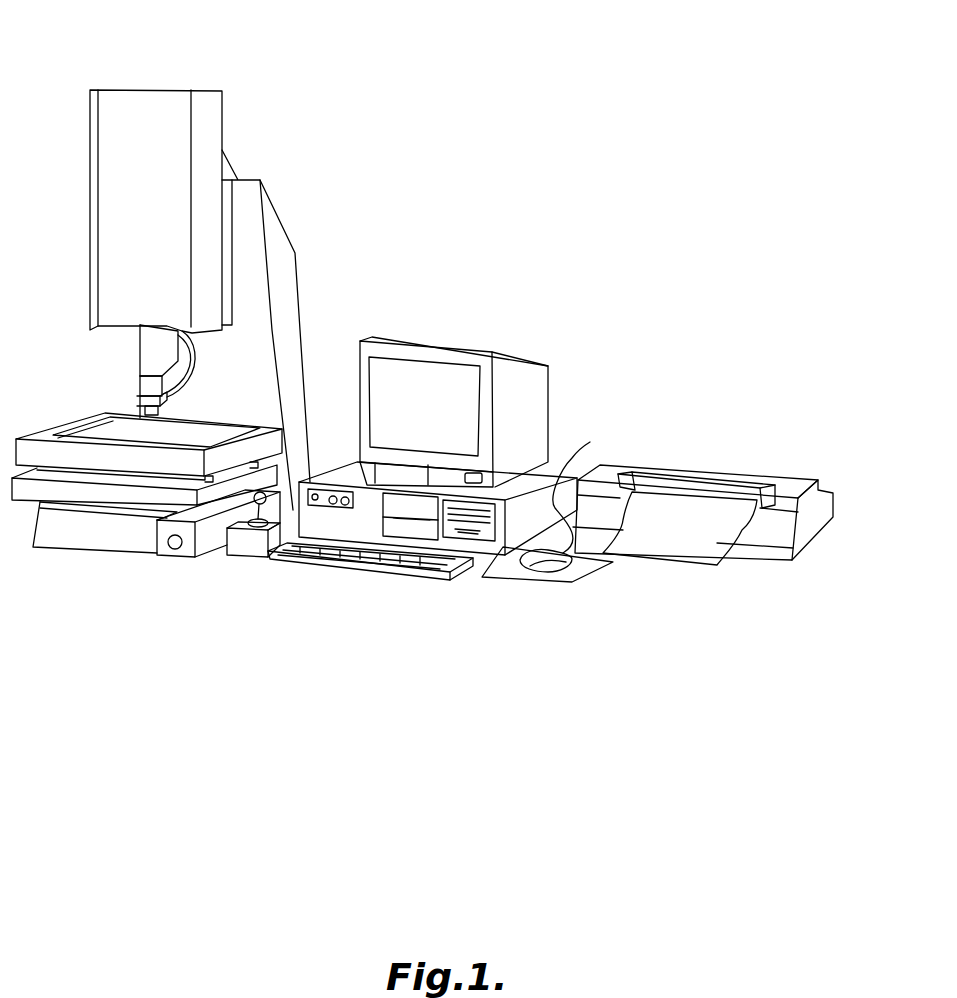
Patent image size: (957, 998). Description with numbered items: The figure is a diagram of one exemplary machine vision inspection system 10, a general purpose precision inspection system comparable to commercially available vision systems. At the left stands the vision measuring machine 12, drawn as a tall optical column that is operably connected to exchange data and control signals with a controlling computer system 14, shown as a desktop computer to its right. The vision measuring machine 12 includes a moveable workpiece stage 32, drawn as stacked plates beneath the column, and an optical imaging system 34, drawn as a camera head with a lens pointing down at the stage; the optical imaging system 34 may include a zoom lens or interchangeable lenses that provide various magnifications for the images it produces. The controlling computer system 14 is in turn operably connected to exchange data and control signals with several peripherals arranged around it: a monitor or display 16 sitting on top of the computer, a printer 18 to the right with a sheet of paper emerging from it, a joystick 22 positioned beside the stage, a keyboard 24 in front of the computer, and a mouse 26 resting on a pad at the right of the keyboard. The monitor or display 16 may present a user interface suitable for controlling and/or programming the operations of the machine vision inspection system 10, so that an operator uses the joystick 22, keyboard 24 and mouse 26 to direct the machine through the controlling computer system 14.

The machine vision inspection system 10 is at (553, 152).
The vision measuring machine 12 is at (143, 89).
The controlling computer system 14 is at (565, 465).
The monitor or display 16 is at (438, 341).
The printer 18 is at (710, 470).
The joystick 22 is at (247, 557).
The keyboard 24 is at (357, 568).
The mouse 26 is at (560, 568).
The moveable workpiece stage 32 is at (63, 423).
The optical imaging system 34 is at (138, 328).